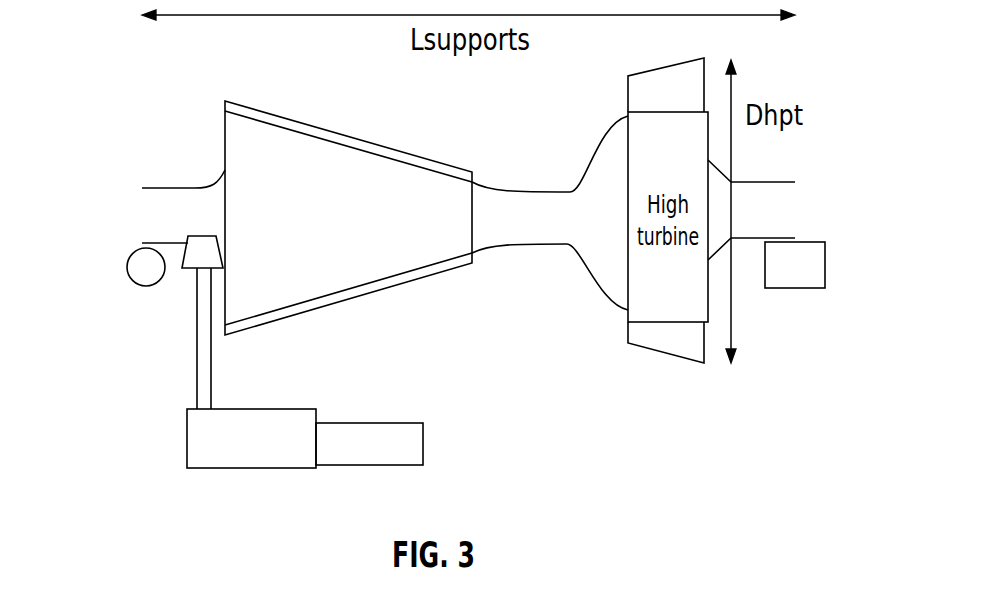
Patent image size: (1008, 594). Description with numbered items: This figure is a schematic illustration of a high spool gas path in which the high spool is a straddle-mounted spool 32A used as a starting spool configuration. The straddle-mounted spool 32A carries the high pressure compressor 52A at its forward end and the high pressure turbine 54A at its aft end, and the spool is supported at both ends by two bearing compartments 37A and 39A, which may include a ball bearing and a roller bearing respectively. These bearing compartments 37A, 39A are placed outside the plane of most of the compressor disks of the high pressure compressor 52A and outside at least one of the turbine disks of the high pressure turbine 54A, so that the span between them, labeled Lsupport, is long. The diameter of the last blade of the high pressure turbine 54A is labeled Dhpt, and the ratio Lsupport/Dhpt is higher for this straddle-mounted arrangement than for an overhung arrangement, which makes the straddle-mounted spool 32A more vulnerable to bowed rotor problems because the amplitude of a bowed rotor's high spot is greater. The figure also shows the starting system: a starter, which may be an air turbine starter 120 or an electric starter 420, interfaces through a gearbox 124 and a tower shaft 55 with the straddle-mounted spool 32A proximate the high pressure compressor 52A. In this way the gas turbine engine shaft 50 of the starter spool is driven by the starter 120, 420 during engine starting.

The gas turbine engine shaft 50 is at (192, 172).
The bearing compartment 37A is at (127, 266).
The straddle-mounted spool 32A is at (560, 149).
The high pressure compressor 52A is at (381, 284).
The high pressure turbine 54A is at (628, 283).
The tower shaft 55 is at (211, 352).
The gearbox 124 is at (216, 469).
The air turbine starter 120 is at (439, 438).
The electric starter 420 is at (423, 445).
The bearing compartment 39A is at (795, 241).